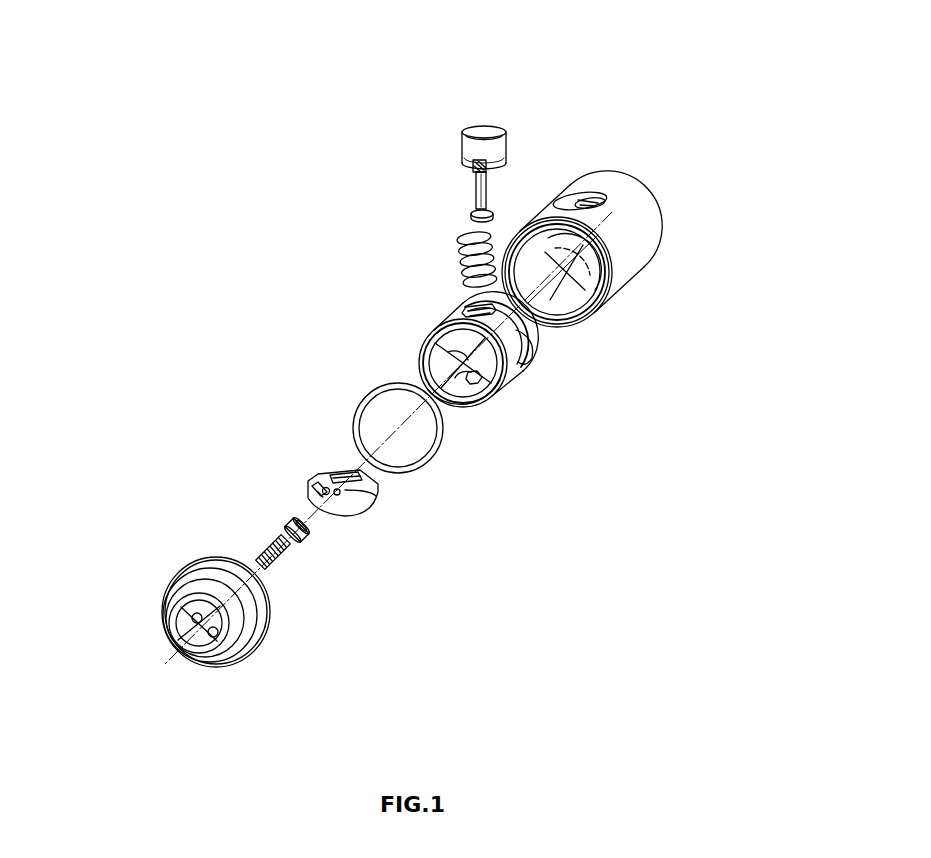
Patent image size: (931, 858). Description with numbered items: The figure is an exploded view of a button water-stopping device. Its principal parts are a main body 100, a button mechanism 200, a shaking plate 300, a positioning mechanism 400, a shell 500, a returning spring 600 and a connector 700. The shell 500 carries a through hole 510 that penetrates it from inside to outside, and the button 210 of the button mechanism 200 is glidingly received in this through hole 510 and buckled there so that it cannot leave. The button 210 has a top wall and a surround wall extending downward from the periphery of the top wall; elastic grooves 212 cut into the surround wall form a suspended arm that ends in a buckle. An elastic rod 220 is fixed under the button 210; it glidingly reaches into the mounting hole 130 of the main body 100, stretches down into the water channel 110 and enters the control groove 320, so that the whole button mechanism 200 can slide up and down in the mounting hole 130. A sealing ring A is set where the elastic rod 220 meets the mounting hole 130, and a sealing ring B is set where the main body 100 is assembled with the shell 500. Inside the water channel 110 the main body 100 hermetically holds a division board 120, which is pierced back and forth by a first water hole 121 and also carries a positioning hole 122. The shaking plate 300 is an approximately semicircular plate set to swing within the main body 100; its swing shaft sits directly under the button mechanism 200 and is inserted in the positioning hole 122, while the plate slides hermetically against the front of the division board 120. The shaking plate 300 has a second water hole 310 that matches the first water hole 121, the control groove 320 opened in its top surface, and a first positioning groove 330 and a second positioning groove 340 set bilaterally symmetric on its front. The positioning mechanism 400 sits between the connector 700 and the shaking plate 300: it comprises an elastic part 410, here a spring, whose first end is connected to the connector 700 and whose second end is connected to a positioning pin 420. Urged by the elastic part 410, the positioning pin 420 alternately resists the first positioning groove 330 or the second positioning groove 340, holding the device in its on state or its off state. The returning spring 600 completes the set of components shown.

The main body 100 is at (518, 382).
The water channel 110 is at (485, 405).
The division board 120 is at (419, 341).
The first water hole 121 is at (437, 332).
The positioning hole 122 is at (507, 390).
The mounting hole 130 is at (525, 352).
The button mechanism 200 is at (440, 120).
The button 210 is at (482, 128).
The elastic grooves 212 is at (500, 164).
The elastic rod 220 is at (476, 190).
The shaking plate 300 is at (317, 449).
The second water hole 310 is at (307, 488).
The control groove 320 is at (328, 472).
The first positioning groove 330 is at (310, 481).
The second positioning groove 340 is at (368, 492).
The positioning mechanism 400 is at (272, 609).
The elastic part 410 is at (283, 567).
The positioning pin 420 is at (308, 536).
The shell 500 is at (651, 249).
The through hole 510 is at (604, 204).
The returning spring 600 is at (450, 273).
The connector 700 is at (170, 588).
The sealing ring A is at (474, 217).
The sealing ring B is at (440, 453).